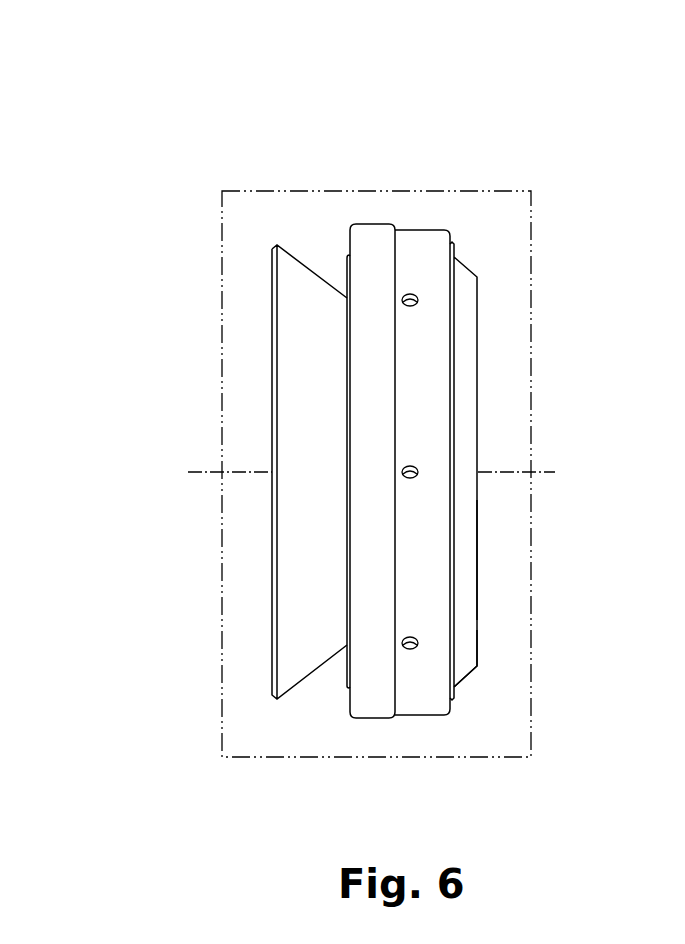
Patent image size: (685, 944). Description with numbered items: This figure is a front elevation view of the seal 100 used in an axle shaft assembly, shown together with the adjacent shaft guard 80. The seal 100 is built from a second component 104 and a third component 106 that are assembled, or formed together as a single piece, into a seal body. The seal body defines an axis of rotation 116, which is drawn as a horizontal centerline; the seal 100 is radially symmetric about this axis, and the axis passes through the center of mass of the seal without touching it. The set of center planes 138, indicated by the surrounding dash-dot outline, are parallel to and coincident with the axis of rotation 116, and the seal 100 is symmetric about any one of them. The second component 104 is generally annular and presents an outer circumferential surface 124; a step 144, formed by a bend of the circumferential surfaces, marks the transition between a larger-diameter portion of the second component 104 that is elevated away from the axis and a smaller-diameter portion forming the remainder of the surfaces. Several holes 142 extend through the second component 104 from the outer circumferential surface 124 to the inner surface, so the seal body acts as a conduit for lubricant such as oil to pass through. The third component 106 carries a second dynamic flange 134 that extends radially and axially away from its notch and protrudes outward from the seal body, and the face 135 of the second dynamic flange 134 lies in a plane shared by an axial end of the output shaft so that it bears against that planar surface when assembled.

The seal 100 is at (240, 121).
The second component 104 is at (365, 235).
The step 144 is at (385, 237).
The outer circumferential surface 124 is at (427, 242).
The set of center planes 138 is at (532, 223).
The holes 142 is at (418, 298).
The third component 106 is at (468, 370).
The face 135 is at (477, 561).
The second dynamic flange 134 is at (468, 639).
The shaft guard 80 is at (300, 665).
The axis of rotation 116 is at (200, 472).